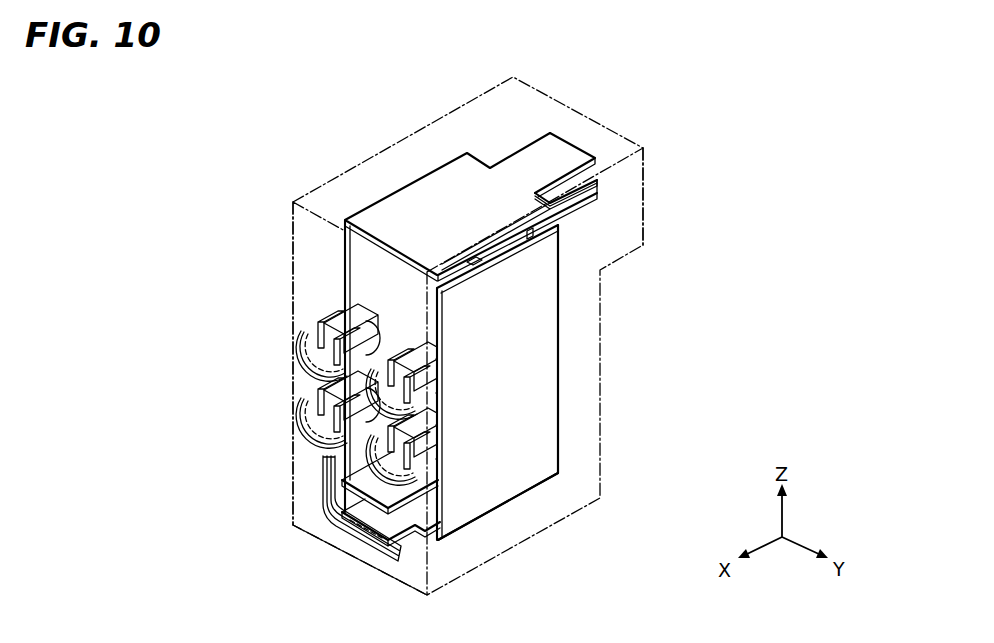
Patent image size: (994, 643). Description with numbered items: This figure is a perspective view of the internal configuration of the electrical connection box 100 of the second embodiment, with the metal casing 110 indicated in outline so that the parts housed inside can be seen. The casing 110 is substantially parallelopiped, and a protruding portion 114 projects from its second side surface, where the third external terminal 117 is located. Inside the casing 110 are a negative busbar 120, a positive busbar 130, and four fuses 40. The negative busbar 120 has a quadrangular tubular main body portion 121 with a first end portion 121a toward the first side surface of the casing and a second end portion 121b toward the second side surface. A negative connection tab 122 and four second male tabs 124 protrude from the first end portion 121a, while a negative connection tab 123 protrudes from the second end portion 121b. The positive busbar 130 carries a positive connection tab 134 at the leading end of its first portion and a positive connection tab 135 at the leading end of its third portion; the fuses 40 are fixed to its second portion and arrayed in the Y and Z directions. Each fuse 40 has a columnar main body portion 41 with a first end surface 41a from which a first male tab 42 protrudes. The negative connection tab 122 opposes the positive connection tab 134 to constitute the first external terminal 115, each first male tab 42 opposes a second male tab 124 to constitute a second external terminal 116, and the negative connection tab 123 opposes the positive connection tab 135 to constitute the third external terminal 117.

The electrical connection box 100 is at (341, 118).
The casing 110 is at (427, 128).
The protruding portion 114 is at (627, 253).
The first external terminal 115 is at (290, 547).
The second external terminal 116 is at (222, 393).
The third external terminal 117 is at (647, 121).
The negative busbar 120 is at (476, 419).
The main body portion 121 is at (470, 508).
The first end portion 121a is at (433, 540).
The second end portion 121b is at (560, 430).
The negative connection tab 122 is at (370, 517).
The negative connection tab 123 is at (567, 150).
The second male tab 124 is at (432, 376).
The positive busbar 130 is at (566, 194).
The positive connection tab 134 is at (333, 473).
The positive connection tab 135 is at (590, 210).
The fuse 40 is at (405, 277).
The main body portion 41 is at (374, 391).
The first end surface 41a is at (353, 313).
The first male tab 42 is at (374, 394).